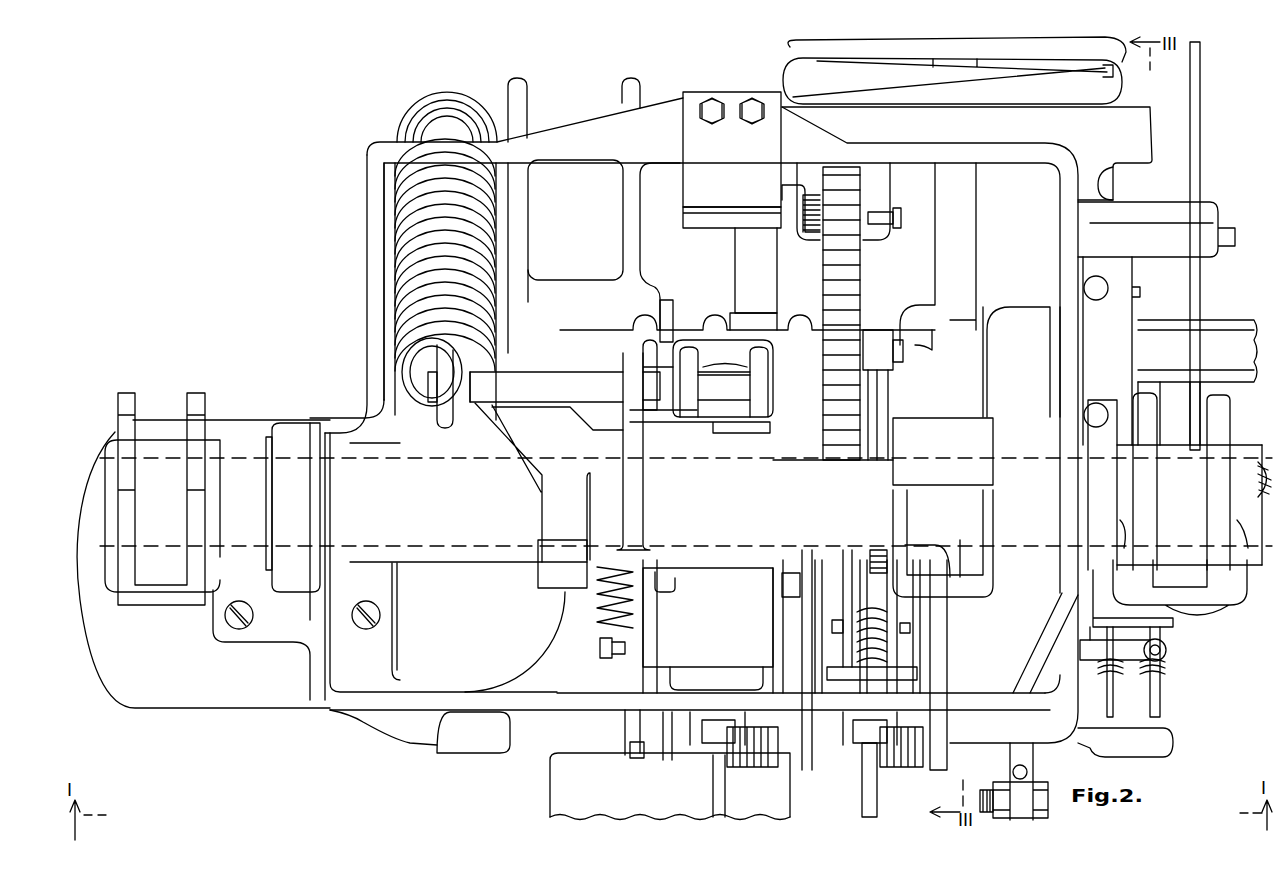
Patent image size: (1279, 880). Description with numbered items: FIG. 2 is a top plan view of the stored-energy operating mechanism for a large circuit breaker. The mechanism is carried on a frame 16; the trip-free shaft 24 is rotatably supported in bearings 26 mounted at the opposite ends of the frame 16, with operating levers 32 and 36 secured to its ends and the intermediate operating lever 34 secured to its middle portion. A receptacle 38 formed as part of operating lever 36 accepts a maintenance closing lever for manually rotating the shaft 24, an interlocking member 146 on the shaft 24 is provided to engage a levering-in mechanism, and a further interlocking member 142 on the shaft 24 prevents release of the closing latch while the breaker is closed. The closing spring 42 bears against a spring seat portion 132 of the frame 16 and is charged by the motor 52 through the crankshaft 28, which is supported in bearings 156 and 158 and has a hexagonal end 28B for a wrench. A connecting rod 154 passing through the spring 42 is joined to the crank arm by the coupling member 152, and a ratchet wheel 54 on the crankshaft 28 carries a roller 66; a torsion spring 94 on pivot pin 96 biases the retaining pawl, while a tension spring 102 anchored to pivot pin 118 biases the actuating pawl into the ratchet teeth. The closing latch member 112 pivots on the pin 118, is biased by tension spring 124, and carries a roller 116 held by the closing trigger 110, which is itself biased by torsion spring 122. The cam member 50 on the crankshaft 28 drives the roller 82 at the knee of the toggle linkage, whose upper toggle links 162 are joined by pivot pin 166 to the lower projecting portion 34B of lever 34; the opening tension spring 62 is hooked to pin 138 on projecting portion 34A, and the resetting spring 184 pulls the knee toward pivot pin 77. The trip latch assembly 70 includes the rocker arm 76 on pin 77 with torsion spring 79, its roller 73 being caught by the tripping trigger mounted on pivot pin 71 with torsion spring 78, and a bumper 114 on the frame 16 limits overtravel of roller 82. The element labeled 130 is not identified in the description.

The frame 16 is at (1062, 214).
The trip-free shaft 24 is at (248, 458).
The bearings 26 is at (282, 423).
The crankshaft 28 is at (1178, 382).
The hexagonal end of crankshaft 28B is at (1210, 318).
The operating lever 32 is at (120, 400).
The operating lever 34 is at (604, 447).
The lower projecting portion 34A is at (628, 348).
The lower projecting portion 34B is at (723, 378).
The operating lever 36 is at (1155, 476).
The receptacle 38 is at (1240, 600).
The closing spring 42 is at (1115, 58).
The cam member 50 is at (735, 243).
The motor 52 is at (258, 708).
The ratchet wheel 54 is at (857, 250).
The tension spring 62 is at (452, 108).
The roller 66 is at (888, 332).
The trip latch assembly 70 is at (696, 804).
The pivot pin 71 is at (630, 748).
The roller 73 is at (708, 752).
The rocker arm 76 is at (712, 665).
The pivot pin 77 is at (602, 650).
The torsion spring 78 is at (768, 766).
The torsion spring 79 is at (676, 582).
The roller 82 is at (736, 313).
The torsion spring 94 is at (815, 233).
The pivot pin 96 is at (893, 210).
The tension spring 102 is at (872, 552).
The closing trigger 110 is at (862, 800).
The closing latch member 112 is at (888, 408).
The bumper or stop member 114 is at (684, 186).
The roller 116 is at (862, 752).
The pivot pin 118 is at (780, 580).
The torsion spring 122 is at (922, 766).
The tension spring 124 is at (880, 656).
The stop 130 is at (906, 622).
The spring seat portion 132 is at (1133, 112).
The pin 138 is at (522, 378).
The interlocking member 142 is at (898, 477).
The interlocking member 146 is at (953, 612).
The coupling member 152 is at (932, 322).
The connecting rod 154 is at (978, 196).
The bearing 156 is at (606, 285).
The bearing 158 is at (1132, 298).
The upper toggle links 162 is at (665, 340).
The pivot pin 166 is at (732, 368).
The tension spring 184 is at (602, 610).